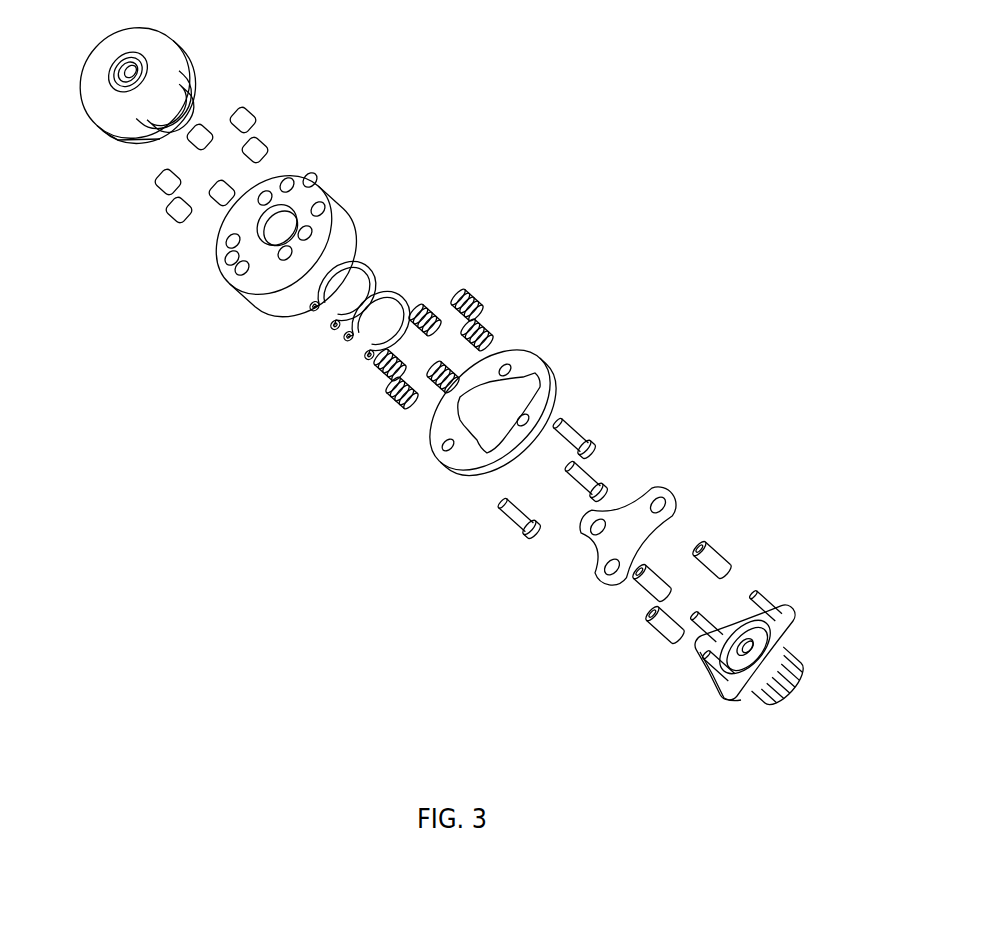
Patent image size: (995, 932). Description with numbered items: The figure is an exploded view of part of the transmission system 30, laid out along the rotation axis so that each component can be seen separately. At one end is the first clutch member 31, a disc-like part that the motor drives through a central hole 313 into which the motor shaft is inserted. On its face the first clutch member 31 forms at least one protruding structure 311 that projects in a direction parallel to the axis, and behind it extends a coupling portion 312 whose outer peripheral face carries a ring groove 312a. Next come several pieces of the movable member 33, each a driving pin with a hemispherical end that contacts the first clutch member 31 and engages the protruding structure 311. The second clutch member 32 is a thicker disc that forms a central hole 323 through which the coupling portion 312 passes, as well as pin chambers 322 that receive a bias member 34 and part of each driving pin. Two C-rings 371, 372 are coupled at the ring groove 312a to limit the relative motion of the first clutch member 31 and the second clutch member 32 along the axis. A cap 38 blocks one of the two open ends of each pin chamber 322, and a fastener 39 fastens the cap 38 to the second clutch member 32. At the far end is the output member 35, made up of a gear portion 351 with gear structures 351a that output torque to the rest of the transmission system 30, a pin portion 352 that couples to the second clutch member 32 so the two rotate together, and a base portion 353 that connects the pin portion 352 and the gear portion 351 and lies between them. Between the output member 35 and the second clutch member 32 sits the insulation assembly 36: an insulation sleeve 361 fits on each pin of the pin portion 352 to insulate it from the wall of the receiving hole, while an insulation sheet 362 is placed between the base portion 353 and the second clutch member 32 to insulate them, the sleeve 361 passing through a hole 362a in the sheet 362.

The transmission system 30 is at (575, 192).
The first clutch member 31 is at (95, 115).
The protruding structure 311 is at (120, 140).
The coupling portion 312 is at (197, 107).
The ring groove 312a is at (185, 95).
The hole 313 is at (125, 67).
The second clutch member 32 is at (223, 310).
The pin chamber 322 is at (278, 255).
The hole 323 is at (283, 217).
The movable member 33 is at (170, 222).
The bias member 34 is at (394, 406).
The output member 35 is at (798, 618).
The gear portion 351 is at (800, 658).
The gear structure 351a is at (783, 703).
The pin portion 352 is at (765, 595).
The base portion 353 is at (725, 702).
The insulation assembly 36 is at (516, 622).
The insulation sleeve 361 is at (660, 627).
The insulation sheet 362 is at (595, 583).
The hole 362a is at (597, 602).
The C-ring 371 is at (370, 263).
The C-ring 372 is at (407, 295).
The cap 38 is at (536, 360).
The fastener 39 is at (573, 440).